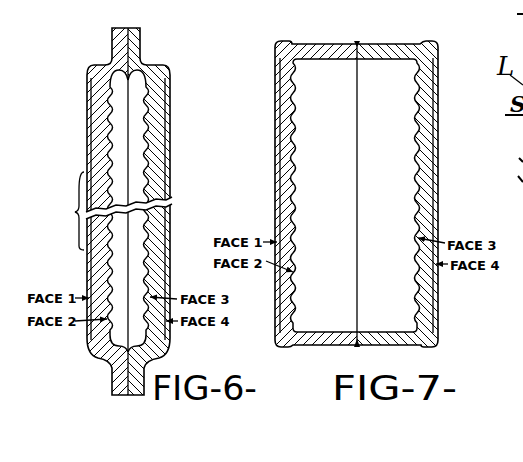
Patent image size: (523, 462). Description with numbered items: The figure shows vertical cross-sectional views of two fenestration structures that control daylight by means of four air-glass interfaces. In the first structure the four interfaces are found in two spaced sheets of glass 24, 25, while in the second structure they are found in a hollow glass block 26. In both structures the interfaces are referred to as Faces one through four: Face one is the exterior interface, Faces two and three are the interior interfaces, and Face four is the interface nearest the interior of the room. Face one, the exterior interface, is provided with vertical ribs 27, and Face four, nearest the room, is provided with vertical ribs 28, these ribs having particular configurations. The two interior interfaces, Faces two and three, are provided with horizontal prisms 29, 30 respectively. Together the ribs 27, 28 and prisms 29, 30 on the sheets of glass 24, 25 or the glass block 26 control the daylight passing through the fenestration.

In FIG. 6, the sheet of glass 24 is at (98, 68).
In FIG. 6, the sheet of glass 25 is at (153, 67).
In FIG. 7, the hollow glass block 26 is at (341, 53).
In FIG. 6, the vertical ribs 27 is at (87, 125).
In FIG. 7, the vertical ribs 27 is at (278, 232).
In FIG. 6, the vertical ribs 28 is at (167, 127).
In FIG. 7, the vertical ribs 28 is at (436, 210).
In FIG. 6, the horizontal prisms 29 is at (107, 156).
In FIG. 7, the horizontal prisms 29 is at (291, 184).
In FIG. 6, the horizontal prisms 30 is at (150, 162).
In FIG. 7, the horizontal prisms 30 is at (418, 172).